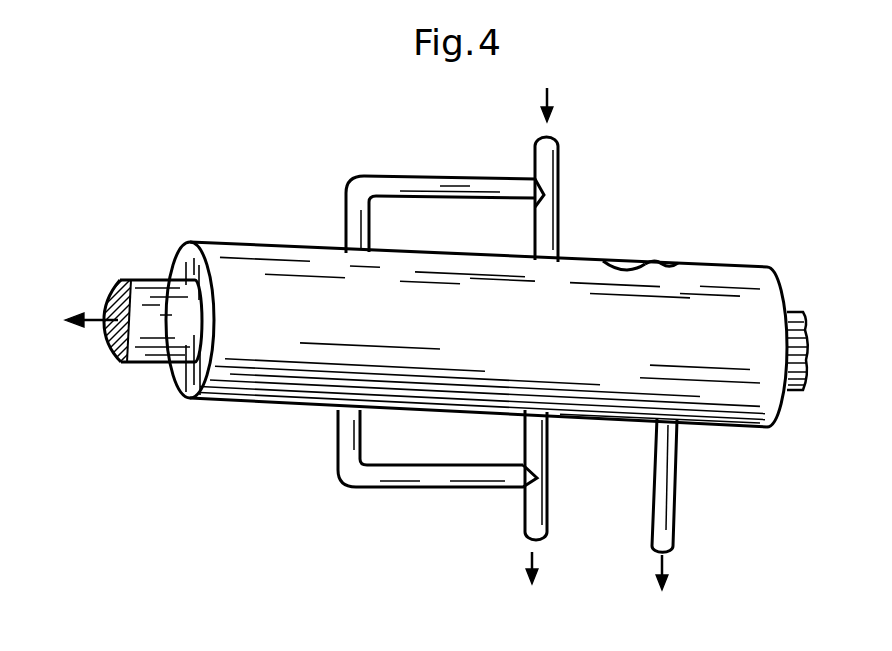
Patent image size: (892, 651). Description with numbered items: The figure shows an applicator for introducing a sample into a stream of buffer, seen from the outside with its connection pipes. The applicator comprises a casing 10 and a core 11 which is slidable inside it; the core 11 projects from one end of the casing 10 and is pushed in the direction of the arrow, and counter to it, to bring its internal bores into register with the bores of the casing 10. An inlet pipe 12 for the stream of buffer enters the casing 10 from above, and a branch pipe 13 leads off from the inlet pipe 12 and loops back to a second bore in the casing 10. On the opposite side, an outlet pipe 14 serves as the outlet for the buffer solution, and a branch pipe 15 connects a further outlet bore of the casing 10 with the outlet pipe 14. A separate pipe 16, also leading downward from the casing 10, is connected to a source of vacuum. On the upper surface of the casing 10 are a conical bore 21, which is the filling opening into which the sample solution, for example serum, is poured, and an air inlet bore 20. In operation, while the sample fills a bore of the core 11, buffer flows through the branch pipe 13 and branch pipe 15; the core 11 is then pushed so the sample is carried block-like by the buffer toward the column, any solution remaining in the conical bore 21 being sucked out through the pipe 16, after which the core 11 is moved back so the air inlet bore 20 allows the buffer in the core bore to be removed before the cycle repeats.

The casing 10 is at (269, 268).
The core 11 is at (151, 290).
The inlet pipe 12 is at (545, 169).
The branch pipe 13 is at (446, 186).
The outlet pipe 14 is at (538, 505).
The branch pipe 15 is at (428, 480).
The pipe 16 is at (665, 509).
The air inlet bore 20 is at (670, 266).
The conical bore 21 is at (627, 270).